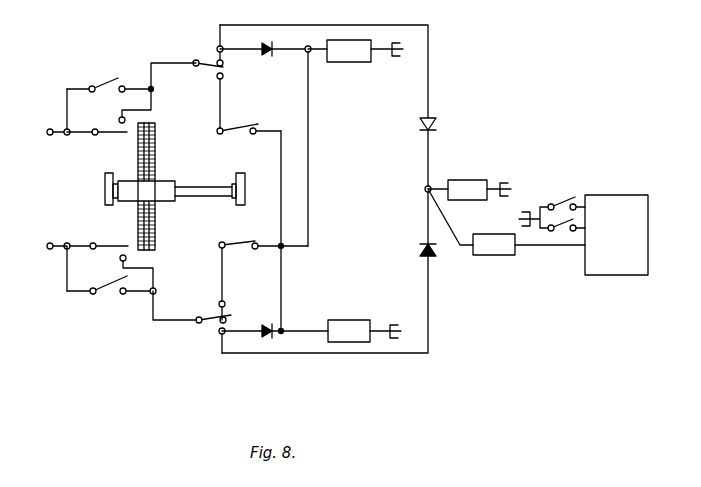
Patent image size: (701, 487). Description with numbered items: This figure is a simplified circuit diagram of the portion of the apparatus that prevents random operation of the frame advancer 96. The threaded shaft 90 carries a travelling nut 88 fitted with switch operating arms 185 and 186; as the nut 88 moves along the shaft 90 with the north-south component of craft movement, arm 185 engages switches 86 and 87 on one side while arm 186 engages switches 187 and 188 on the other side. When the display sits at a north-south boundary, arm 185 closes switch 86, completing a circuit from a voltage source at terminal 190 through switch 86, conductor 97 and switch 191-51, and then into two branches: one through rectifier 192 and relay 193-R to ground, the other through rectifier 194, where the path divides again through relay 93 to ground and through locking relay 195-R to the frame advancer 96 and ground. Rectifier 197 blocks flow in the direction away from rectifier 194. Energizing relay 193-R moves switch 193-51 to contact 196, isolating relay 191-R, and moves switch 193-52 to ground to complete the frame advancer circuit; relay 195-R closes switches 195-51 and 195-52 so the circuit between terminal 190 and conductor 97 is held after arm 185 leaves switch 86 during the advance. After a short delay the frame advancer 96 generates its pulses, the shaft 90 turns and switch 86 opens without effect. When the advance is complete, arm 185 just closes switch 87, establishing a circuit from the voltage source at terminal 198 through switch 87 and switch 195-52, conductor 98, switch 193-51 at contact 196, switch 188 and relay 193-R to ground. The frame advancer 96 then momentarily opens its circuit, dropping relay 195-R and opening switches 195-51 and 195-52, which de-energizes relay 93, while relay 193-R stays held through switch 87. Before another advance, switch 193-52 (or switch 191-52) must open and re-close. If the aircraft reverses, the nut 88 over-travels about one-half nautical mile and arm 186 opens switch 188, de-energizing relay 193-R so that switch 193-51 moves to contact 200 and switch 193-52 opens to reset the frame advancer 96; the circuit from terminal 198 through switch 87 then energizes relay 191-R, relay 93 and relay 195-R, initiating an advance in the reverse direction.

The switch 86 is at (108, 133).
The switch 87 is at (106, 245).
The travelling nut 88 is at (165, 192).
The threaded shaft 90 is at (156, 147).
The relay 93 is at (470, 180).
The frame advancer 96 is at (616, 235).
The conductor 97 is at (166, 63).
The conductor 98 is at (160, 322).
The switch operating arm 185 is at (105, 188).
The switch operating arm 186 is at (258, 157).
The switch 187 is at (241, 128).
The switch 188 is at (238, 244).
The terminal 190 is at (52, 128).
The switch 191-51 is at (208, 60).
The switch 191-52 is at (560, 225).
The relay 191-R is at (346, 320).
The rectifier 192 is at (273, 52).
The switch 193-51 is at (205, 309).
The switch 193-52 is at (566, 200).
The relay 193-R is at (340, 63).
The rectifier 194 is at (436, 121).
The switch 195-51 is at (98, 86).
The switch 195-52 is at (110, 292).
The locking relay 195-R is at (490, 256).
The contact 196 is at (225, 302).
The rectifier 197 is at (418, 252).
The terminal 198 is at (48, 267).
The contact 200 is at (221, 334).